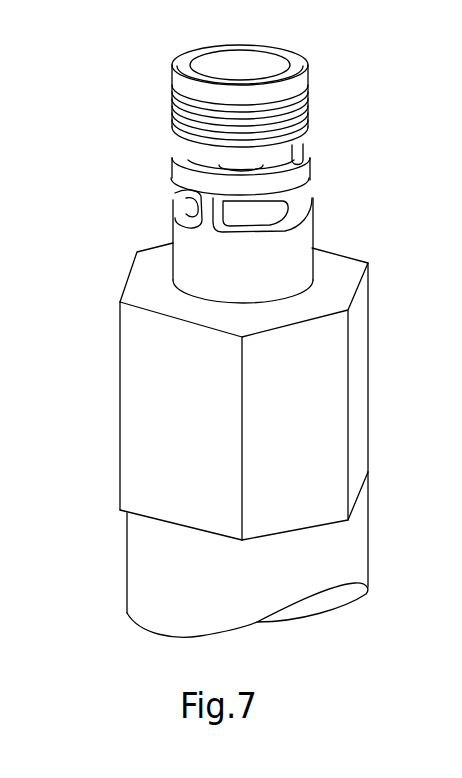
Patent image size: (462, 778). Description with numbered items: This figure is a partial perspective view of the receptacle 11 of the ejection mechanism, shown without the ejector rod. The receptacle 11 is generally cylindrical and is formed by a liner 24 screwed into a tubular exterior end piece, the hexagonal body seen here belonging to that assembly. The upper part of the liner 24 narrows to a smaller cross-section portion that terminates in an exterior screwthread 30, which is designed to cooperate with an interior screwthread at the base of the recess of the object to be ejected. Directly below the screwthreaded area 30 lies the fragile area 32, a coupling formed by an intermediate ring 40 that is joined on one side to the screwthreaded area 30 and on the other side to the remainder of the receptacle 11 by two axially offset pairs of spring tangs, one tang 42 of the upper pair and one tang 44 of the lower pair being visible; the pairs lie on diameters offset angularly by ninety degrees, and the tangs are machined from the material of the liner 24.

The receptacle 11 is at (358, 616).
The liner 24 is at (369, 418).
The exterior screwthread 30 is at (312, 98).
The fragile area 32 is at (252, 211).
The intermediate ring 40 is at (173, 163).
The tang 42 is at (306, 151).
The tang 44 is at (175, 199).